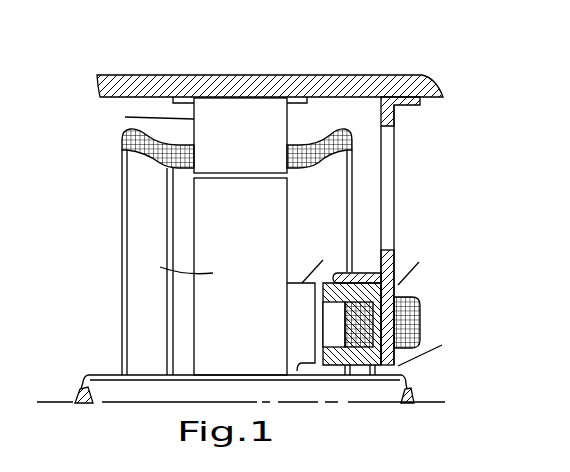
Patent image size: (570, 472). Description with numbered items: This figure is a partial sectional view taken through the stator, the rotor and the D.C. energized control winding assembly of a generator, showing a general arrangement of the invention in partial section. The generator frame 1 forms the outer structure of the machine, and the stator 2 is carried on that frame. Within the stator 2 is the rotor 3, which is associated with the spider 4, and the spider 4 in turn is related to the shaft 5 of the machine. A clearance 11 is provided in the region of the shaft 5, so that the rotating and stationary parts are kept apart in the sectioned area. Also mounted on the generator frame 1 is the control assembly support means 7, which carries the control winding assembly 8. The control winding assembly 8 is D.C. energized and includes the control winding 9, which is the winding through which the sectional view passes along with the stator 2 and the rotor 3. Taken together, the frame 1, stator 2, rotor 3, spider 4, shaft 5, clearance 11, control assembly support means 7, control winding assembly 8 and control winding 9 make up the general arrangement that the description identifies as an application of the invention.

The generator frame 1 is at (363, 75).
The stator 2 is at (287, 121).
The rotor 3 is at (287, 204).
The spider 4 is at (298, 315).
The shaft 5 is at (416, 389).
The control assembly support means 7 is at (395, 122).
The control winding assembly 8 is at (397, 283).
The control winding 9 is at (422, 311).
The clearance 11 is at (398, 368).